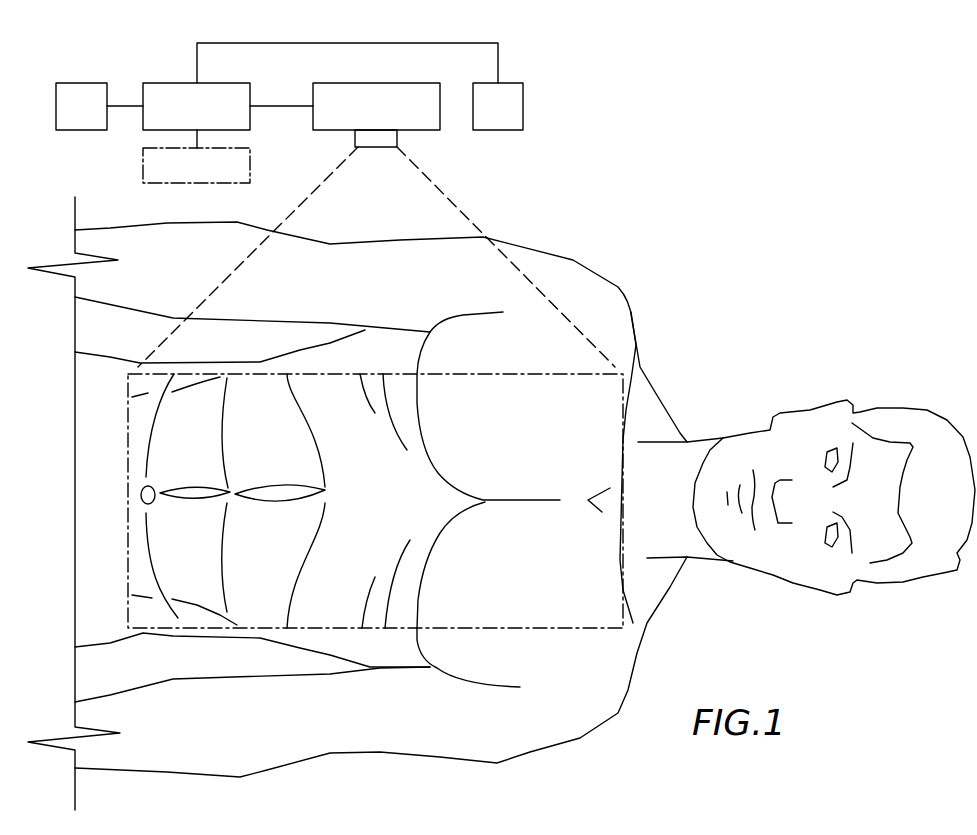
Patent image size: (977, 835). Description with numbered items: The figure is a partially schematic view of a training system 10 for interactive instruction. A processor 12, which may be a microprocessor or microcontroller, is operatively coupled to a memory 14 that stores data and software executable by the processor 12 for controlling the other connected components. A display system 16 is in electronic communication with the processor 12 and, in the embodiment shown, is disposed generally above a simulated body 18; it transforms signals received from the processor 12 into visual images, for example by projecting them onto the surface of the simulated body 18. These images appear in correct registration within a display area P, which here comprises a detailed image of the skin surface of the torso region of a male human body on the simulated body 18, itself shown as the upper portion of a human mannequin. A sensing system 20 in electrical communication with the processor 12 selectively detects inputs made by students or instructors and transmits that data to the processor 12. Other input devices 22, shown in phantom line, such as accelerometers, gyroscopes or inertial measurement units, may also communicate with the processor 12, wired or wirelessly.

The training system 10 is at (662, 184).
The processor 12 is at (172, 82).
The memory 14 is at (70, 82).
The display system 16 is at (425, 130).
The simulated body 18 is at (630, 312).
The sensing system 20 is at (523, 108).
The input devices 22 is at (143, 163).
The display area P is at (628, 403).